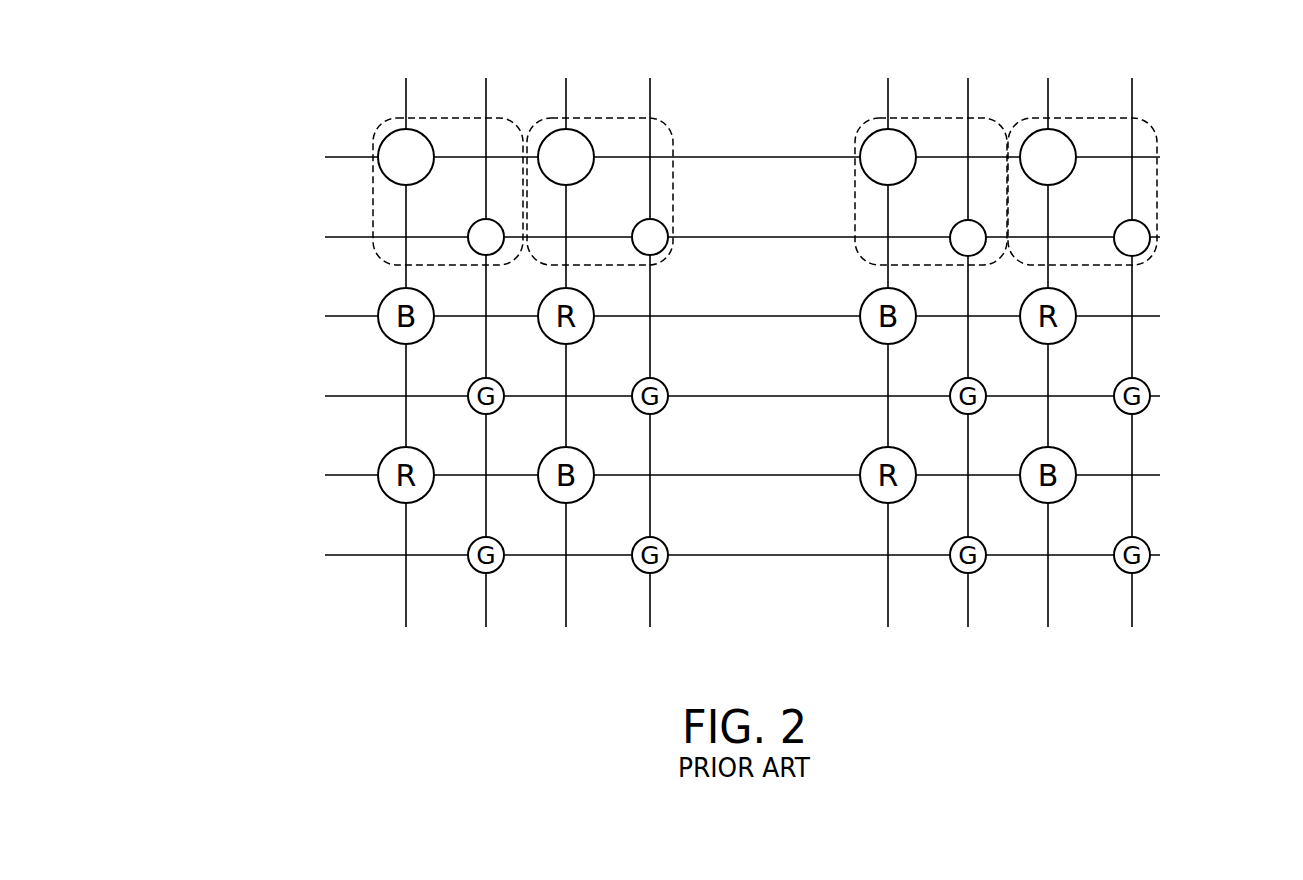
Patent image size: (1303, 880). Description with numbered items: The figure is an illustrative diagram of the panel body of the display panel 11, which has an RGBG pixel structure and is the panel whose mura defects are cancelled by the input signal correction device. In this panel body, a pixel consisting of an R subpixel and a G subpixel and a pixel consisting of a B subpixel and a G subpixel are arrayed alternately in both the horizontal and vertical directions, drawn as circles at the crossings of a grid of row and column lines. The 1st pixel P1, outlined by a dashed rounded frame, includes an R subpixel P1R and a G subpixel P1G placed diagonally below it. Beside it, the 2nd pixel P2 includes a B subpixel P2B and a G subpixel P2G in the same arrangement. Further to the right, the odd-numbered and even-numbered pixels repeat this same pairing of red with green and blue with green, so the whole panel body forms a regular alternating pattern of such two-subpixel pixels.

The display panel 11 is at (258, 136).
The 1st pixel P1 is at (441, 117).
The R subpixel P1R is at (392, 132).
The G subpixel P1G is at (471, 223).
The 2nd pixel P2 is at (600, 117).
The B subpixel P2B is at (552, 132).
The G subpixel P2G is at (662, 223).